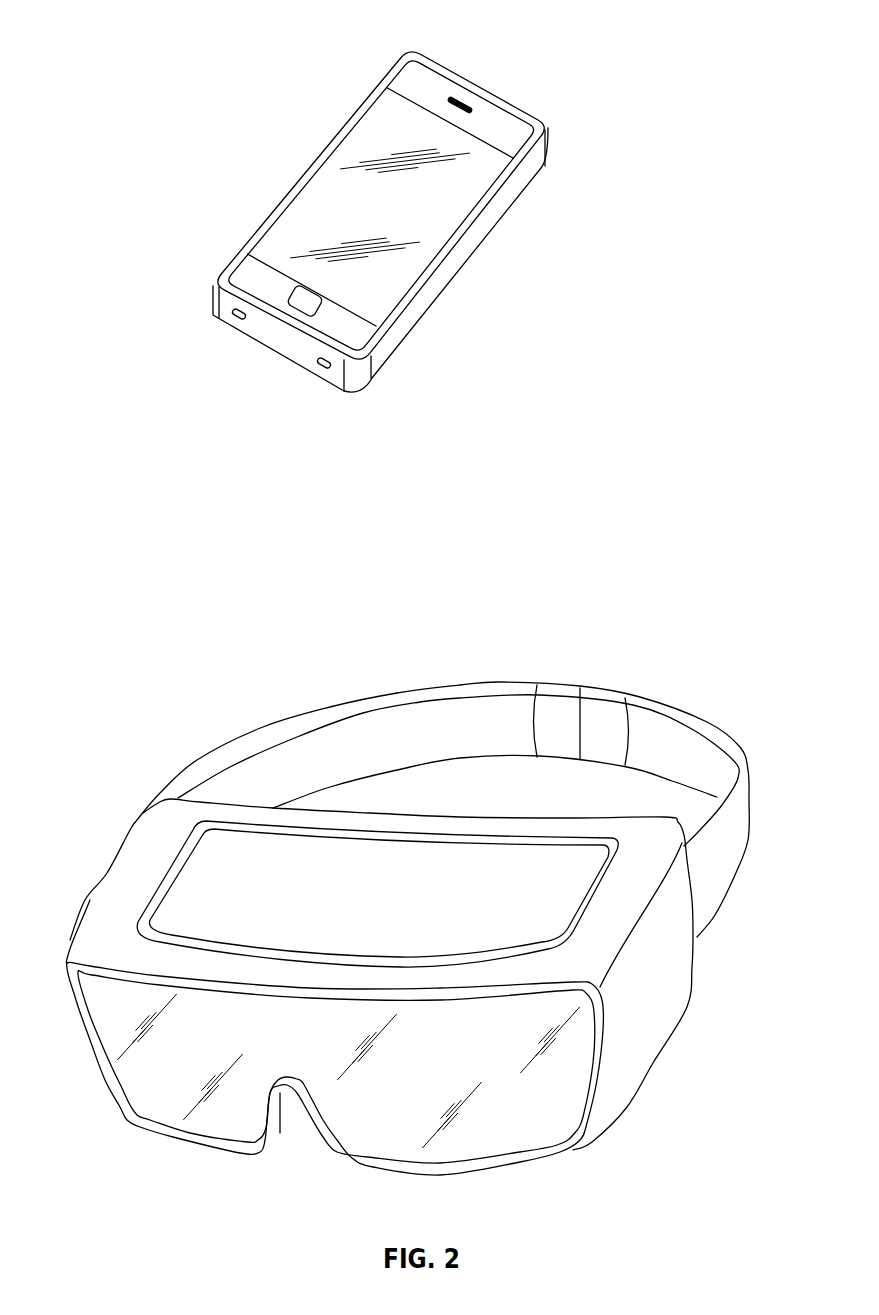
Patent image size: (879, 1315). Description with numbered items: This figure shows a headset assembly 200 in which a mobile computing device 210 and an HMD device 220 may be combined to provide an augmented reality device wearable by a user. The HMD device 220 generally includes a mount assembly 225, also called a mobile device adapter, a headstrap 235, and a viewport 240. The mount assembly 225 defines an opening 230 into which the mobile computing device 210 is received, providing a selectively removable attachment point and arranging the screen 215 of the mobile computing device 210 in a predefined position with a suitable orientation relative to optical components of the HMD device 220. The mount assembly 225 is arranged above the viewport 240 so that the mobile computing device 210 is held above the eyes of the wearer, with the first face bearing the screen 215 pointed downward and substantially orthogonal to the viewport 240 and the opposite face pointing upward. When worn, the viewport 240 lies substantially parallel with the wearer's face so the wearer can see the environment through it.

The mobile device 200 is at (172, 34).
The mobile computing device 210 is at (478, 85).
The screen 215 is at (340, 215).
The HMD device 220 is at (135, 700).
The mount assembly 225 is at (120, 897).
The opening 230 is at (417, 900).
The headstrap 235 is at (733, 858).
The viewport 240 is at (373, 1127).